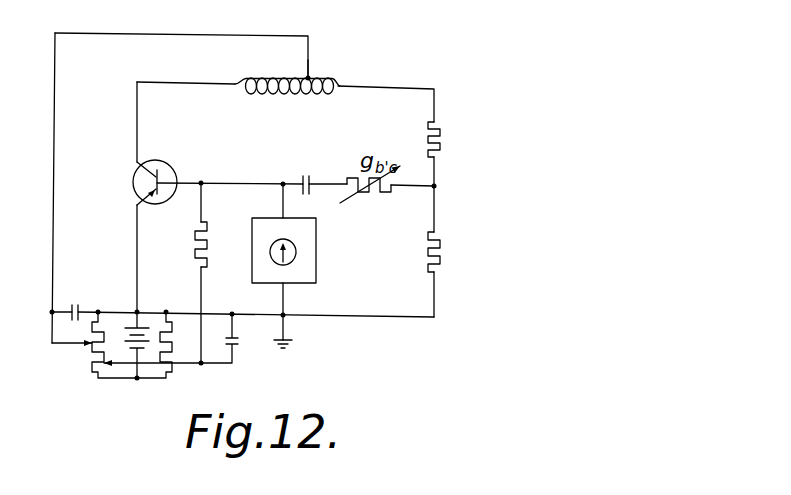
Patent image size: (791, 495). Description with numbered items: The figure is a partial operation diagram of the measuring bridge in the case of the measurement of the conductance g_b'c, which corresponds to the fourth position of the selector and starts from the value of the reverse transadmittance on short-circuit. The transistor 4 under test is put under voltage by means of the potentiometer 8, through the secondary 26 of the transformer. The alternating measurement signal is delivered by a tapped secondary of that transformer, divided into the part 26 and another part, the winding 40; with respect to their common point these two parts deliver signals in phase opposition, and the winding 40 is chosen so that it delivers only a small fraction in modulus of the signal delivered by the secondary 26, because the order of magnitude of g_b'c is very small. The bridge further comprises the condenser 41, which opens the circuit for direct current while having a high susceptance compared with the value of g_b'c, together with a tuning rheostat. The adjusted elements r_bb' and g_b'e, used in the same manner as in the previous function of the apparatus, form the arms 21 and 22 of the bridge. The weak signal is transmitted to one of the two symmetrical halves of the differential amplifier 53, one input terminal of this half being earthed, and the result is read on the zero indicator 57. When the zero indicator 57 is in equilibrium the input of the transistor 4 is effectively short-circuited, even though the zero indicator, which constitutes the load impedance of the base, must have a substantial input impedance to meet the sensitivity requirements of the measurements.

The transistor 4 is at (132, 170).
The secondary 26 is at (274, 78).
The winding 40 is at (311, 77).
The arm 21 is at (440, 122).
The condenser 41 is at (306, 177).
The zero indicator 57 is at (296, 252).
The differential amplifier 53 is at (300, 285).
The arm 22 is at (440, 272).
The potentiometer 8 is at (92, 358).